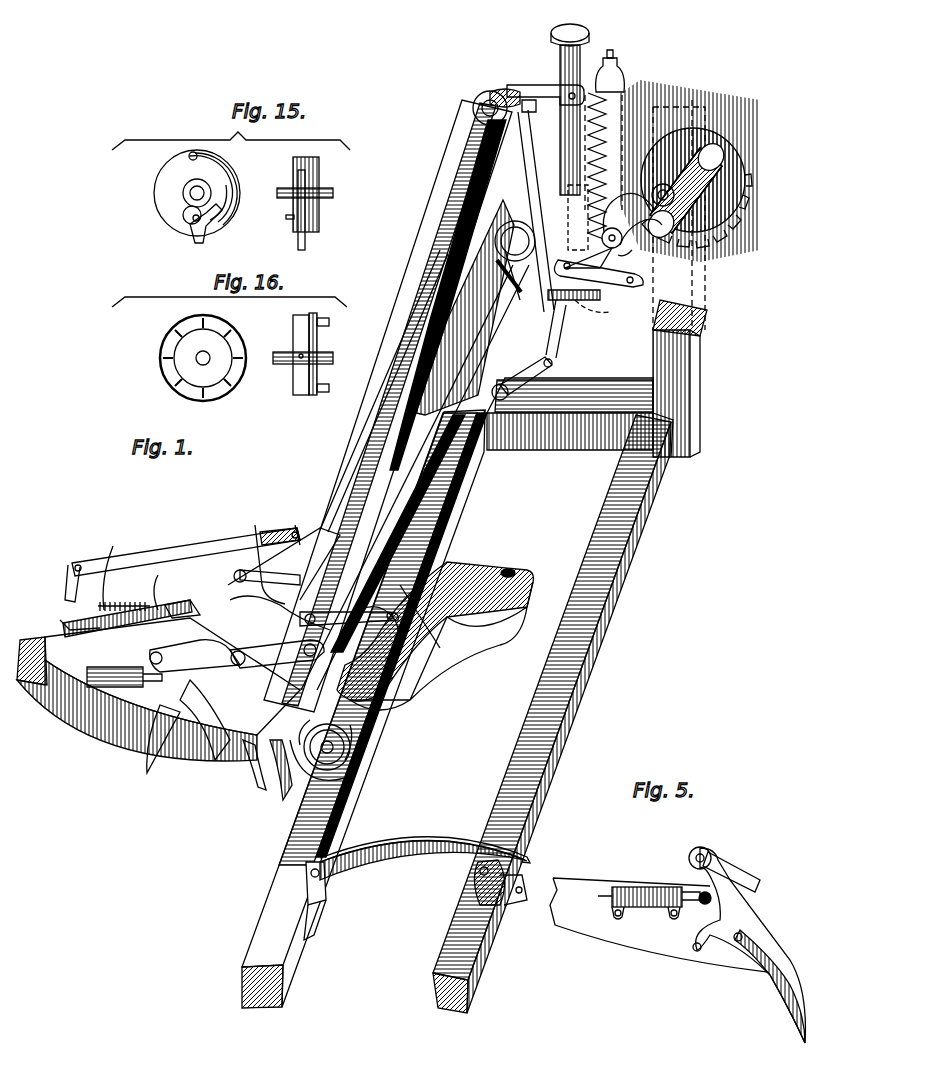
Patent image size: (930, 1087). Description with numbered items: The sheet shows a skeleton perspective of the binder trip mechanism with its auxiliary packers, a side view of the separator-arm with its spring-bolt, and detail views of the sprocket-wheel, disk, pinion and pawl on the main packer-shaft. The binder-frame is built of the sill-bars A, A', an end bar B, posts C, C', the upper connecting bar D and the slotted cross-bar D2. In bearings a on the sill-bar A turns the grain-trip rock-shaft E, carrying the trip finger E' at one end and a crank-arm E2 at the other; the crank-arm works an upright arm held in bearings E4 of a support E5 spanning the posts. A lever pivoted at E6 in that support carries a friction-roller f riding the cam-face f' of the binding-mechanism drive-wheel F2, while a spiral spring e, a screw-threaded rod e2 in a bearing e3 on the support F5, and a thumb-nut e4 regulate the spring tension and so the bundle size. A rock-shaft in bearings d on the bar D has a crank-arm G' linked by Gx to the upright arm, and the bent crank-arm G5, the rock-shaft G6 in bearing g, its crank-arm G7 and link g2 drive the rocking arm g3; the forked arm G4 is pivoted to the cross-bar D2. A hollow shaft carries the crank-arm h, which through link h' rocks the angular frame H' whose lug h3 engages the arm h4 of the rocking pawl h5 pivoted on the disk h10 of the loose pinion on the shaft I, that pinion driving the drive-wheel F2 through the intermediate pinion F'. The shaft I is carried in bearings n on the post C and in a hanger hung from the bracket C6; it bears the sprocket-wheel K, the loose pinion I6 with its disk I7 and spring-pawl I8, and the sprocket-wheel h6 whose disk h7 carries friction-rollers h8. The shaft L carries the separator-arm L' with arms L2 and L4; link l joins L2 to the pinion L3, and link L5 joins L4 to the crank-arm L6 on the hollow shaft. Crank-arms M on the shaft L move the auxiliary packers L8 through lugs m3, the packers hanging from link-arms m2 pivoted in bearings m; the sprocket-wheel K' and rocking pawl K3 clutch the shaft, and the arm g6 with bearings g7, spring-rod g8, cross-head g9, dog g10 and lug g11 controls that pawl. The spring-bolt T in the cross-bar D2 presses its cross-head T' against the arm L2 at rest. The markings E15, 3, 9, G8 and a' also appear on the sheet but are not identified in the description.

In FIG. 15, the hub or disk h10 is at (178, 178).
In FIG. 15, the pawl arm h4 is at (206, 238).
In FIG. 15, the rocking spring-pawl h5 is at (183, 228).
In FIG. 1, the rocking spring-pawl h5 is at (452, 230).
In FIG. 16, the enlarged hub or disk h7 is at (175, 340).
In FIG. 16, the sprocket-wheel h6 is at (182, 366).
In FIG. 16, the friction-rollers h8 is at (330, 320).
In FIG. 1, the sill-bar A is at (363, 709).
In FIG. 1, the sill-bar A' is at (552, 714).
In FIG. 1, the end bar B is at (580, 408).
In FIG. 1, the post C' is at (687, 378).
In FIG. 1, the bearings E4 is at (540, 98).
In FIG. 1, the crank-arm G' is at (496, 93).
In FIG. 1, the bearing d is at (475, 115).
In FIG. 1, the link Gx is at (540, 102).
In FIG. 1, the upper or connecting bar D is at (395, 358).
In FIG. 1, the link h' is at (536, 211).
In FIG. 1, the crank-arm h is at (509, 151).
In FIG. 1, the post C is at (444, 381).
In FIG. 1, the shaft I is at (432, 484).
In FIG. 1, the bearings a is at (504, 392).
In FIG. 1, the crank-arm E2 is at (540, 362).
In FIG. 1, the spiral spring e is at (590, 195).
In FIG. 1, the screw-threaded rod e2 is at (612, 58).
In FIG. 1, the thumb-nut or handle e4 is at (600, 90).
In FIG. 1, the bearing e3 is at (612, 110).
In FIG. 1, the binding-mechanism drive-wheel F2 is at (742, 184).
In FIG. 1, the friction-roller f is at (617, 191).
In FIG. 1, the cam-face f' is at (687, 183).
In FIG. 1, the support F5 is at (708, 140).
In FIG. 1, the pivot E6 is at (630, 255).
In FIG. 1, the intermediate pinion F' is at (631, 247).
In FIG. 1, the guide rods E15 is at (650, 290).
In FIG. 1, the angular frame H' is at (595, 287).
In FIG. 1, the pin 3 is at (610, 299).
In FIG. 1, the support E5 is at (570, 148).
In FIG. 1, the lug or projection h3 is at (520, 298).
In FIG. 1, the bearings n is at (527, 300).
In FIG. 1, the pin 9 is at (520, 212).
In FIG. 1, the sprocket-wheel K is at (435, 618).
In FIG. 1, the intermediate slotted cross-bar D2 is at (323, 670).
In FIG. 5, the intermediate slotted cross-bar D2 is at (658, 925).
In FIG. 1, the rocking spring-pawl I8 is at (310, 760).
In FIG. 1, the pinion I6 is at (327, 770).
In FIG. 1, the disk or plate I7 is at (320, 792).
In FIG. 1, the bifurcated or forked arm G4 is at (352, 730).
In FIG. 1, the link G8 is at (440, 648).
In FIG. 1, the bracket C6 is at (392, 633).
In FIG. 1, the bent crank-arm G5 is at (349, 613).
In FIG. 1, the lug m3 is at (150, 705).
In FIG. 1, the link g2 is at (193, 552).
In FIG. 1, the rocking arm g3 is at (66, 588).
In FIG. 1, the pawl or dog g10 is at (70, 620).
In FIG. 1, the lug or projection g11 is at (100, 625).
In FIG. 1, the bearings g7 is at (135, 572).
In FIG. 1, the spring-rod g8 is at (150, 606).
In FIG. 1, the arm g6 is at (112, 618).
In FIG. 1, the cross-head g9 is at (165, 622).
In FIG. 1, the rocking pawl K3 is at (178, 600).
In FIG. 1, the sprocket-wheel K' is at (195, 649).
In FIG. 1, the sliding spring-bolt T is at (124, 666).
In FIG. 5, the sliding spring-bolt T is at (649, 888).
In FIG. 1, the bearings m is at (277, 619).
In FIG. 1, the depending link-arms m2 is at (233, 578).
In FIG. 1, the crank-arm L6 is at (300, 566).
In FIG. 1, the link L5 is at (267, 556).
In FIG. 1, the crank-arm G7 is at (293, 526).
In FIG. 1, the bearing g is at (325, 532).
In FIG. 1, the rock-shaft G6 is at (267, 608).
In FIG. 1, the auxiliary packers L8 is at (160, 775).
In FIG. 1, the crank-arm M is at (210, 740).
In FIG. 1, the separator-arm L' is at (249, 770).
In FIG. 5, the separator-arm L' is at (751, 945).
In FIG. 1, the pinion L3 is at (275, 790).
In FIG. 1, the grain-trip-arm rock-shaft E is at (383, 639).
In FIG. 1, the pivot bracket a' is at (326, 901).
In FIG. 1, the trip arm or finger E' is at (425, 871).
In FIG. 5, the cross-head T' is at (701, 911).
In FIG. 5, the extension or arm L2 is at (712, 852).
In FIG. 5, the link l is at (748, 878).
In FIG. 5, the arm L4 is at (693, 955).
In FIG. 5, the shaft L is at (732, 960).